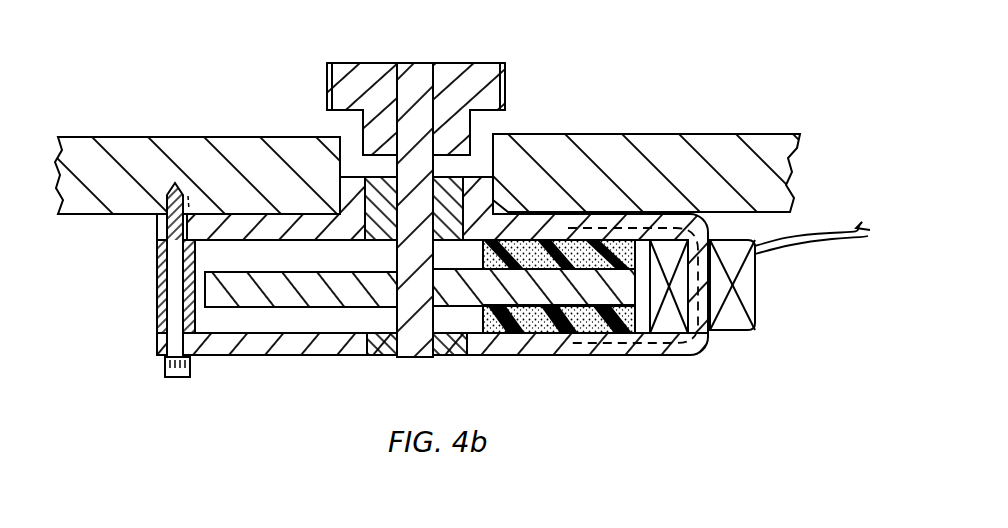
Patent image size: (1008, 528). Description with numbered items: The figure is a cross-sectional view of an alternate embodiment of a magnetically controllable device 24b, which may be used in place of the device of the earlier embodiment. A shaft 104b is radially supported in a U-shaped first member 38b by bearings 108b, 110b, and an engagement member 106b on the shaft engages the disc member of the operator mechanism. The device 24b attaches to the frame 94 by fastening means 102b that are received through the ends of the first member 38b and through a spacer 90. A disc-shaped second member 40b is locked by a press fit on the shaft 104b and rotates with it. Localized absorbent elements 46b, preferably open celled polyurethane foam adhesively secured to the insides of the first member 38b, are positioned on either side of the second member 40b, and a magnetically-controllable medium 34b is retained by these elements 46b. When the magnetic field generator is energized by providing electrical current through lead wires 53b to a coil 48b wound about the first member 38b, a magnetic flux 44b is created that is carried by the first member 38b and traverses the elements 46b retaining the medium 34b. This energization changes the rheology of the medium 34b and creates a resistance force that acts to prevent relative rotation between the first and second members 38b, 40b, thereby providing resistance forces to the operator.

The frame 94 is at (228, 143).
The shaft 104b is at (406, 77).
The engagement member 106b is at (490, 95).
The bearing 108b is at (470, 174).
The localized absorbent elements 46b is at (525, 248).
The magnetically-controllable medium 34b is at (621, 237).
The lead wires 53b is at (797, 248).
The coil 48b is at (757, 292).
The first member 38b is at (699, 344).
The magnetic flux 44b is at (645, 355).
The magnetically controllable device 24b is at (687, 388).
The bearing 110b is at (377, 353).
The second member 40b is at (315, 292).
The fastening means 102b is at (172, 378).
The spacer 90 is at (157, 287).